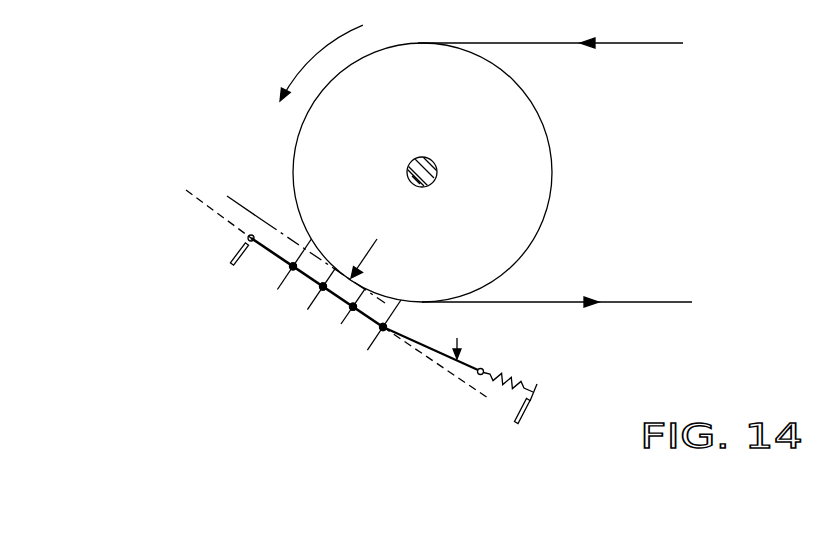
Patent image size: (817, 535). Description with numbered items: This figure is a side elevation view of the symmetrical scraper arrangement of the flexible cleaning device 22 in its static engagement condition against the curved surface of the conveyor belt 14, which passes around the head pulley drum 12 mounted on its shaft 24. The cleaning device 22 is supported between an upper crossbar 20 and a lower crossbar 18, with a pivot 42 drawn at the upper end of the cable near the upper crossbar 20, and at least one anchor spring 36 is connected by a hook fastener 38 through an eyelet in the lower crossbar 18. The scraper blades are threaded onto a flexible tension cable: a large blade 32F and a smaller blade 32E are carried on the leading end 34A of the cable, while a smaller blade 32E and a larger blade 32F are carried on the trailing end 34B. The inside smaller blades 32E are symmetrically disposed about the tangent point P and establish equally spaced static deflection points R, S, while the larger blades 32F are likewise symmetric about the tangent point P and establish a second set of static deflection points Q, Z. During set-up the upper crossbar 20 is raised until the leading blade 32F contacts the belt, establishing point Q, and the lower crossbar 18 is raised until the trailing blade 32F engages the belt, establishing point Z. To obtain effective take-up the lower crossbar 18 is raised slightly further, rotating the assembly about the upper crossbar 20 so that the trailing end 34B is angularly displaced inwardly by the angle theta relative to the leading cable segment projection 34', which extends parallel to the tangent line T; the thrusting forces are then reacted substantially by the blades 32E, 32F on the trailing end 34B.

The head pulley drum 12 is at (553, 152).
The conveyor belt 14 is at (510, 43).
The lower crossbar 18 is at (528, 418).
The upper crossbar 20 is at (230, 261).
The flexible cleaning device 22 is at (200, 353).
The shaft 24 is at (432, 162).
The leading end of the cable 34A is at (273, 253).
The trailing end of the cable 34B is at (423, 344).
The leading cable segment projection 34' is at (315, 310).
The anchor spring 36 is at (504, 373).
The hook fastener 38 is at (539, 392).
The pivot 42 is at (248, 238).
The smaller scraper blades 32E is at (338, 326).
The larger scraper blades 32F is at (277, 289).
The tangent line T is at (256, 210).
The tangent point P is at (372, 250).
The static deflection point Q is at (295, 269).
The static deflection point R is at (324, 290).
The static deflection point S is at (353, 310).
The static deflection point Z is at (383, 331).